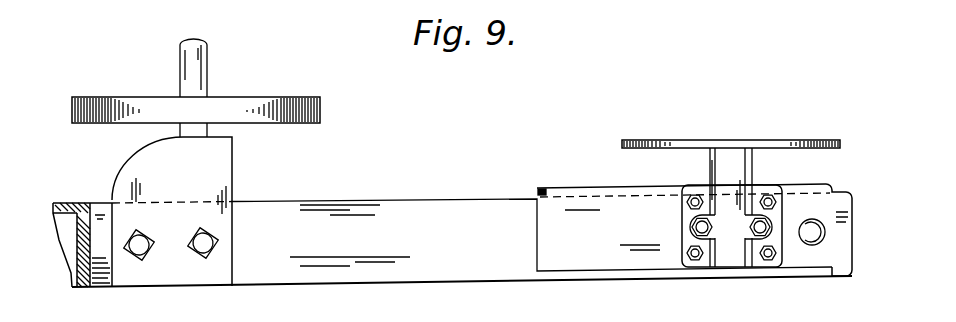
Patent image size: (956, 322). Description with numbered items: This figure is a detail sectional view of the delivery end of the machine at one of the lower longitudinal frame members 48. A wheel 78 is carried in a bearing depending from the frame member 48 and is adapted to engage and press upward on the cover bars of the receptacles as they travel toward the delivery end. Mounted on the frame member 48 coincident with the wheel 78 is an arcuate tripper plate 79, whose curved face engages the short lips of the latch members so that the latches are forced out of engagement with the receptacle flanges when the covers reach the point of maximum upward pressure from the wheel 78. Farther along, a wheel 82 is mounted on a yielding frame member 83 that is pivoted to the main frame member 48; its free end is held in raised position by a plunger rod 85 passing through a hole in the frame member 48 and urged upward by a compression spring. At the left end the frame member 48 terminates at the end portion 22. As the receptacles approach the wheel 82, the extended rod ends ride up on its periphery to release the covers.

The frame end flange 22 is at (80, 190).
The lower frame member 48 is at (430, 202).
The wheel 78 is at (321, 98).
The arcuate tripper plate 79 is at (153, 163).
The wheel 82 is at (663, 133).
The yielding frame member 83 is at (566, 205).
The plunger rod 85 is at (810, 243).